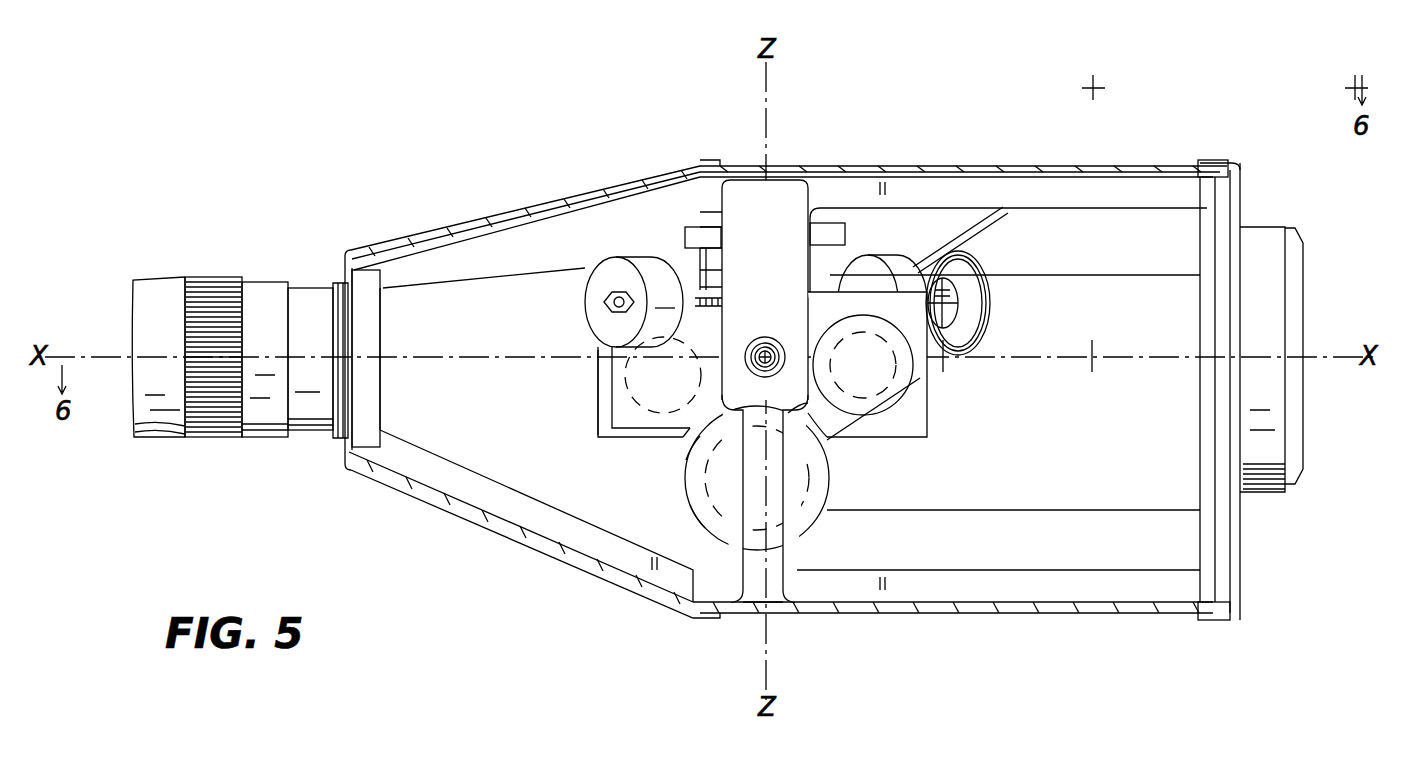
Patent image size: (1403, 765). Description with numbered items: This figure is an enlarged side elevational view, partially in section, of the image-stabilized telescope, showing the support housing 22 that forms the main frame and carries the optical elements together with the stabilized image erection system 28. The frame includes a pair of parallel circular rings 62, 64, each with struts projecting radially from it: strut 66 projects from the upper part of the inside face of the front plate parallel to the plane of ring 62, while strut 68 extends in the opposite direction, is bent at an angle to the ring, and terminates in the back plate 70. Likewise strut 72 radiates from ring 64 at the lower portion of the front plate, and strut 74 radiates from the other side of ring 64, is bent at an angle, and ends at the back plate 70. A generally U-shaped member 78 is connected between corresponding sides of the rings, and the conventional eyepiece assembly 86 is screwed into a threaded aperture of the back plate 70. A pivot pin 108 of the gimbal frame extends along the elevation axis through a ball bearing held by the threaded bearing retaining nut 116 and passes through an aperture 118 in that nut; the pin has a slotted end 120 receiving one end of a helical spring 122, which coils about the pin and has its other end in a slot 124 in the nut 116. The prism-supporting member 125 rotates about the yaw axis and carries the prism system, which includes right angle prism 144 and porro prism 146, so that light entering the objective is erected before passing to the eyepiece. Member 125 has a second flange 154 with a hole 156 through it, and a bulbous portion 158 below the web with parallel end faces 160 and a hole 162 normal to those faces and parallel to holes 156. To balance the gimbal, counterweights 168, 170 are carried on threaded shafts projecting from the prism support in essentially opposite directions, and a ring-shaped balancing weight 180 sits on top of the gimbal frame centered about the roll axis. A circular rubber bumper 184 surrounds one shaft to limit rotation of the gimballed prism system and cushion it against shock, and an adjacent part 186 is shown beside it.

The support housing 22 is at (1097, 203).
The stabilized image erection system 28 is at (910, 428).
The circular ring 62 is at (838, 190).
The circular ring 64 is at (800, 602).
The strut 66 is at (1003, 185).
The strut 68 is at (505, 232).
The back plate 70 is at (365, 382).
The strut 72 is at (1055, 583).
The strut 74 is at (482, 497).
The U-shaped member 78 is at (833, 250).
The eyepiece assembly 86 is at (216, 272).
The pivot pin 108 is at (812, 368).
The bearing retaining nut 116 is at (700, 373).
The aperture 118 is at (770, 346).
The slotted end 120 is at (757, 343).
The helical spring 122 is at (790, 346).
The slot 124 is at (730, 340).
The prism-supporting member 125 is at (935, 383).
The right angle prism 144 is at (628, 420).
The porro prism 146 is at (808, 488).
The second flange 154 is at (648, 440).
The hole 156 is at (600, 372).
The bulbous portion 158 is at (815, 532).
The end face 160 is at (688, 476).
The hole 162 is at (700, 510).
The counterweight 168 is at (908, 255).
The counterweight 170 is at (585, 300).
The balancing weight 180 is at (870, 218).
The rubber bumper 184 is at (985, 270).
The knob hub 186 is at (983, 335).